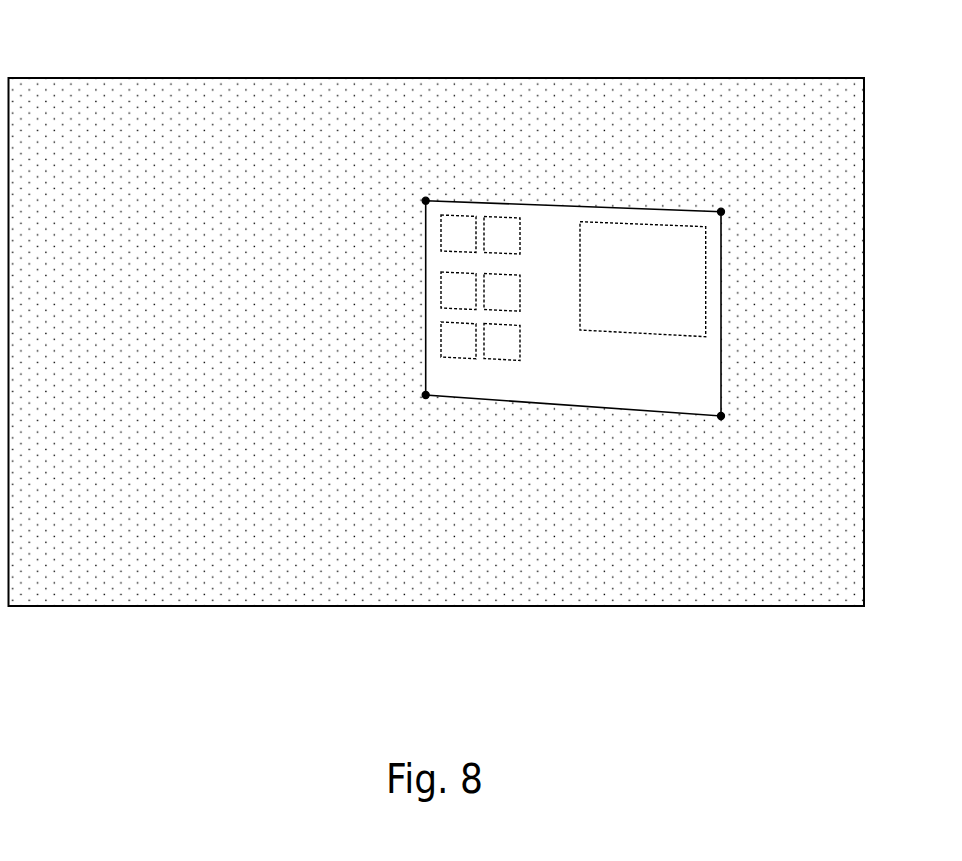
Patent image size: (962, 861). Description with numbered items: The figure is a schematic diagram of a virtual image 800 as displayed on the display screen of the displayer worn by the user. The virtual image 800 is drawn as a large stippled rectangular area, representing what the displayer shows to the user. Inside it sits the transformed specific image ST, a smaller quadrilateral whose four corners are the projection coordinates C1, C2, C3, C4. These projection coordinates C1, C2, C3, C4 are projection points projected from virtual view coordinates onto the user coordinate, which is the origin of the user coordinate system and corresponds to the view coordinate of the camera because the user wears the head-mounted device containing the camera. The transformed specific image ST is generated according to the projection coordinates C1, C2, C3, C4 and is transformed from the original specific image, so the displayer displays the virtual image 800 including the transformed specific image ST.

The virtual image 800 is at (864, 272).
The transformed specific image ST is at (570, 205).
The projection coordinate C1 is at (407, 185).
The projection coordinate C2 is at (742, 197).
The projection coordinate C3 is at (407, 411).
The projection coordinate C4 is at (739, 428).